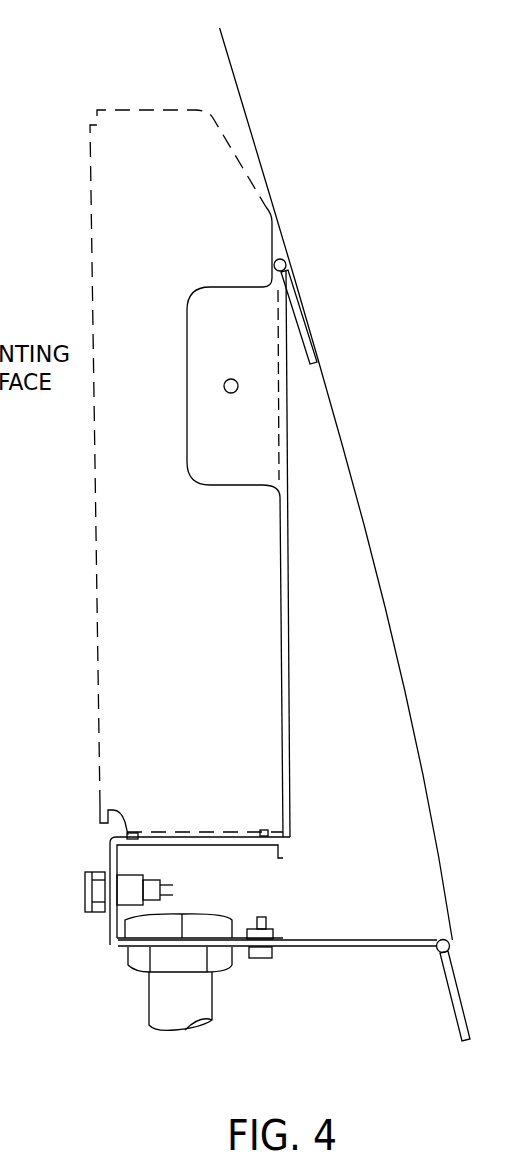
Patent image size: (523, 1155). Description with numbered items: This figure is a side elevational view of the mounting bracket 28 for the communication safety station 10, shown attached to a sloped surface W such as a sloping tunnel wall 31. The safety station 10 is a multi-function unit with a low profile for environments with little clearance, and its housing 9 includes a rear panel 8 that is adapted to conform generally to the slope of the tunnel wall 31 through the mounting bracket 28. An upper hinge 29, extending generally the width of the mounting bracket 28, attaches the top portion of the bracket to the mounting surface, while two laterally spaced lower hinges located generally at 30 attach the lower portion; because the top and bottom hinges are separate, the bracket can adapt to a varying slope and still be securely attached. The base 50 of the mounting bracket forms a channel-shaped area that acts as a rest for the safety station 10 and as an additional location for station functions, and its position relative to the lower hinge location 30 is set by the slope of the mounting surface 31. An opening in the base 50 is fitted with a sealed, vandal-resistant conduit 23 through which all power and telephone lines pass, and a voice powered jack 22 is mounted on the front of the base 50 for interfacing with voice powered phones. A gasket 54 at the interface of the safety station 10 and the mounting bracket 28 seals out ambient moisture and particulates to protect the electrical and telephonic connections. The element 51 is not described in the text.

The rear panel 8 is at (264, 624).
The housing 9 is at (152, 471).
The safety station 10 is at (95, 516).
The voice powered jack 22 is at (85, 887).
The conduit 23 is at (150, 998).
The mounting bracket 28 is at (288, 655).
The upper hinge 29 is at (298, 302).
The lower hinge location 30 is at (457, 982).
The sloping tunnel wall 31 is at (330, 392).
The base 50 is at (260, 883).
The bracket flange 51 is at (252, 450).
The gasket 54 is at (100, 812).
The sloped surface W is at (350, 484).